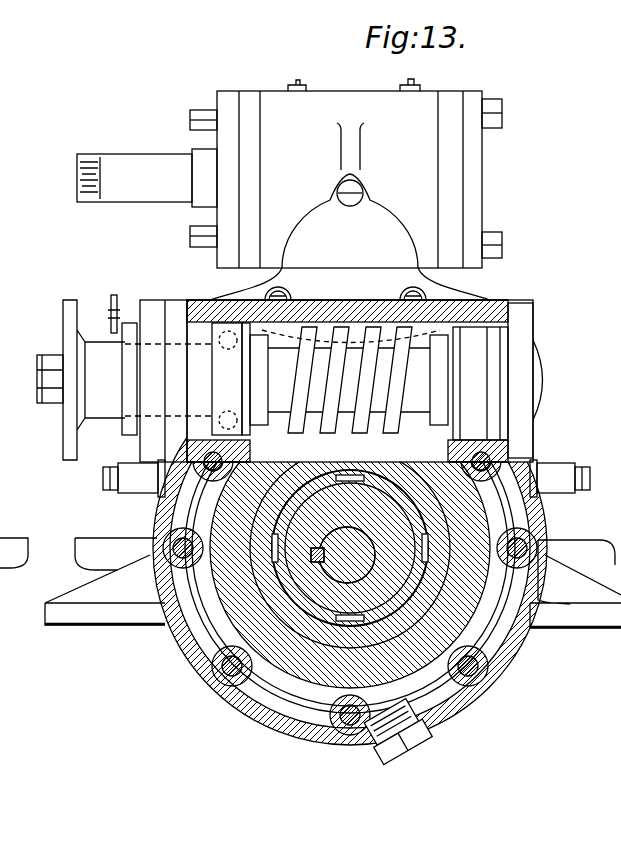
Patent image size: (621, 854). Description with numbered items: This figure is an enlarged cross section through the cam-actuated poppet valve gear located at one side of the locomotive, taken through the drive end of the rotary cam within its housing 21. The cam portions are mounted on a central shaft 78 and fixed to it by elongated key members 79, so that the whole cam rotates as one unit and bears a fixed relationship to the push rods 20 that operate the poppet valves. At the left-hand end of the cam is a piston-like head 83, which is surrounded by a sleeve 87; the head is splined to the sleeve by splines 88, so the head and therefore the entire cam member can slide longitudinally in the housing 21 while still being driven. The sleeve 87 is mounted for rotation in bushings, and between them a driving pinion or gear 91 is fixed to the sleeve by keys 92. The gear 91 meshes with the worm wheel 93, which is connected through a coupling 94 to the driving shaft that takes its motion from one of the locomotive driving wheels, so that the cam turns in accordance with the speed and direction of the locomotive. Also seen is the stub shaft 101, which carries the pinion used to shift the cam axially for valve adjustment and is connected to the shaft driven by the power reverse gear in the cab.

The stub shaft 101 is at (138, 162).
The coupling 94 is at (65, 312).
The worm wheel 93 is at (345, 330).
The push rods 20 is at (132, 483).
The elongated key members 79 is at (318, 560).
The housing 21 is at (205, 650).
The head 83 is at (335, 598).
The central shaft 78 is at (308, 590).
The keys 92 is at (316, 600).
The driving pinion or gear 91 is at (417, 645).
The splines 88 is at (397, 625).
The sleeve 87 is at (413, 643).